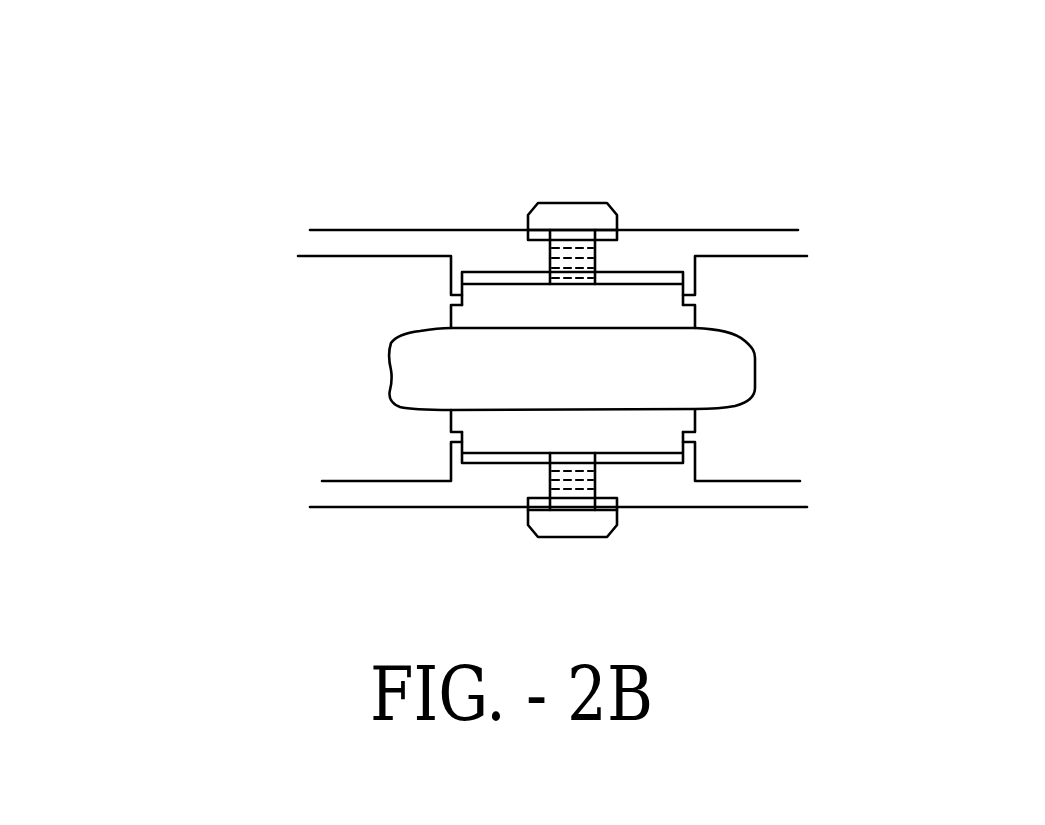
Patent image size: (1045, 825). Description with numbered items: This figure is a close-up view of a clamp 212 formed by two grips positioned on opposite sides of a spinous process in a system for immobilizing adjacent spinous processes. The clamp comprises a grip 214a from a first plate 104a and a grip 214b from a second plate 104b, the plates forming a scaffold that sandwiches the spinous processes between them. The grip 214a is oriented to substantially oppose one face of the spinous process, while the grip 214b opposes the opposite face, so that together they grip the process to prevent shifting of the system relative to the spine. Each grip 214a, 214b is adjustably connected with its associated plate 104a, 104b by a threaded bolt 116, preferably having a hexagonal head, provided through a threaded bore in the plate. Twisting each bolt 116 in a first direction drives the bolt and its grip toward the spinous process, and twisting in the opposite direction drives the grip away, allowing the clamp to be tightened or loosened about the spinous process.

The roller assembly 212 is at (360, 136).
The first plate 104a is at (368, 498).
The second plate 104b is at (351, 238).
The threaded bolt 116 is at (571, 207).
The grip 214a is at (655, 437).
The grip 214b is at (648, 298).